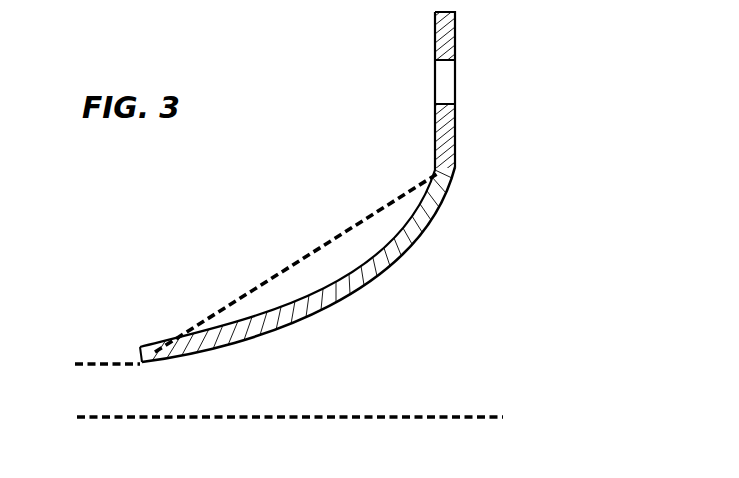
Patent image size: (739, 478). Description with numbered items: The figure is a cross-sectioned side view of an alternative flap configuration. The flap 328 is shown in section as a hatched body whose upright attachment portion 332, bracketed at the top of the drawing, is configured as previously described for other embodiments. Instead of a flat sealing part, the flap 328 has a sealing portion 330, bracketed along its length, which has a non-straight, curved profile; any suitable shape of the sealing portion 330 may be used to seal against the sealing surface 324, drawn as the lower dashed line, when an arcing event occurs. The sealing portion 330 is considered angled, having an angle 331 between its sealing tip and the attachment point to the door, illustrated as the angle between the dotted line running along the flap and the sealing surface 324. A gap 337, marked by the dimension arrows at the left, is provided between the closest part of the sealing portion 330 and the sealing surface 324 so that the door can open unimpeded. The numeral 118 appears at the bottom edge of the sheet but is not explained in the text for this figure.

The flap 328 is at (408, 110).
The sealing portion 330 is at (428, 165).
The angle 331 is at (232, 322).
The attachment portion 332 is at (465, 12).
The sealing surface 324 is at (328, 417).
The gap 337 is at (93, 460).
The surface 118 is at (261, 475).